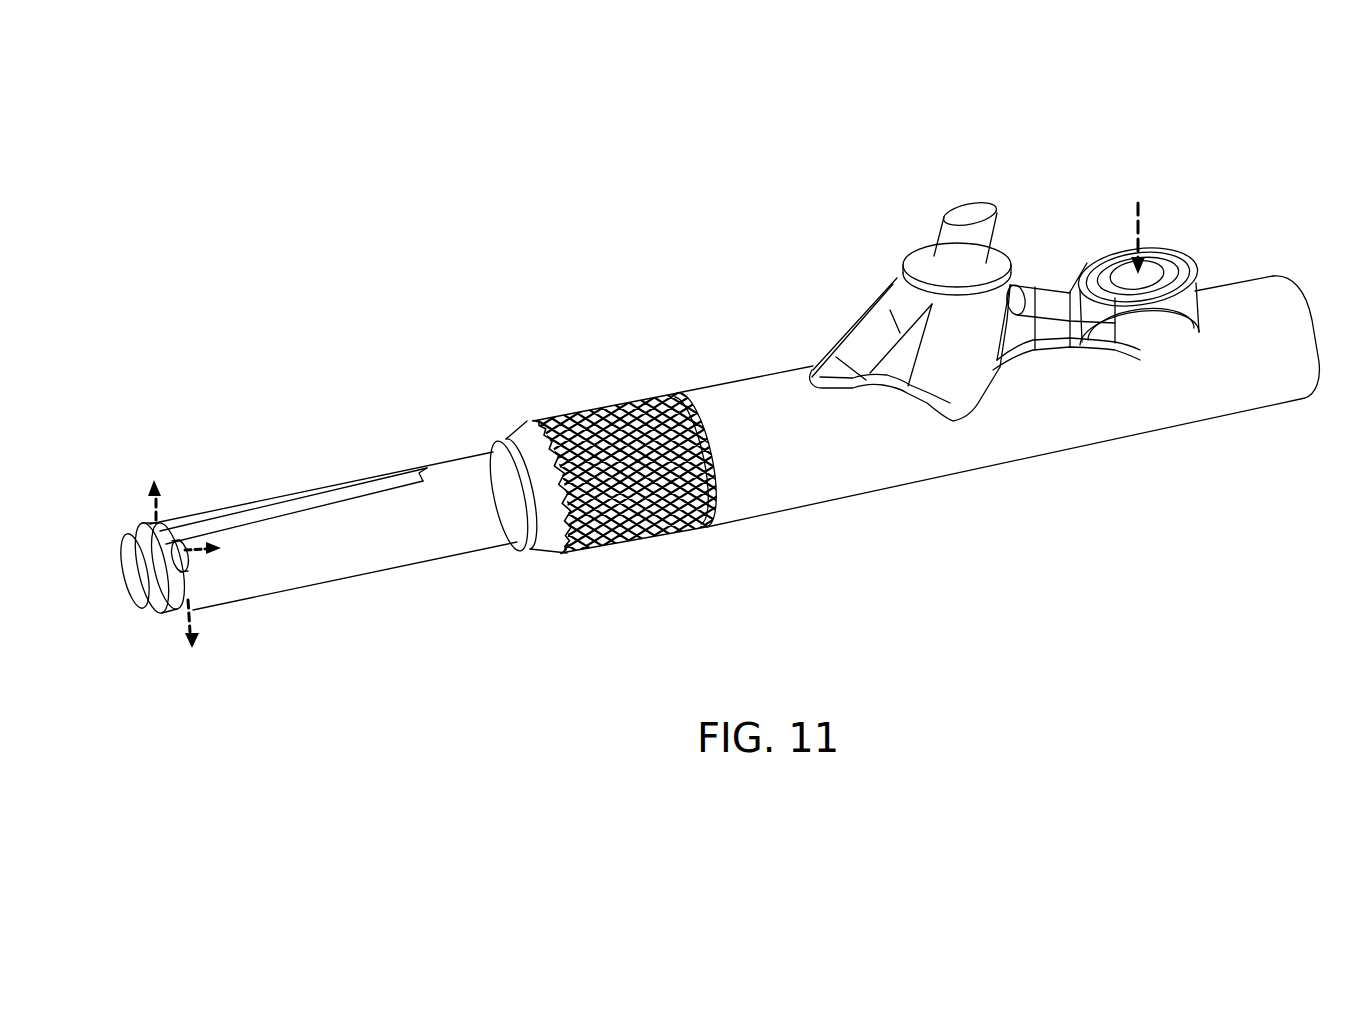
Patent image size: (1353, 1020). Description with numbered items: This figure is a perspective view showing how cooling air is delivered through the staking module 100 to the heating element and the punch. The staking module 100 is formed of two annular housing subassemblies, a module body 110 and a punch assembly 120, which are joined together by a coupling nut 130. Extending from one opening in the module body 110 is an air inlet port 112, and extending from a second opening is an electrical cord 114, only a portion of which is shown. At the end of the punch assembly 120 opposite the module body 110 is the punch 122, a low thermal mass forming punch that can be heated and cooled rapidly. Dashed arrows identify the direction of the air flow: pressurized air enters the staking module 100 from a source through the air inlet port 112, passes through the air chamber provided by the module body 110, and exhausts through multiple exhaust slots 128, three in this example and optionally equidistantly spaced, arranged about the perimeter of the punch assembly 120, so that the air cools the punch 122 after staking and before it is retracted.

The staking module 100 is at (422, 274).
The module body 110 is at (1018, 503).
The air inlet port 112 is at (1152, 272).
The electrical cord 114 is at (965, 212).
The punch assembly 120 is at (361, 615).
The punch 122 is at (137, 572).
The exhaust slots 128 is at (183, 567).
The coupling nut 130 is at (601, 438).